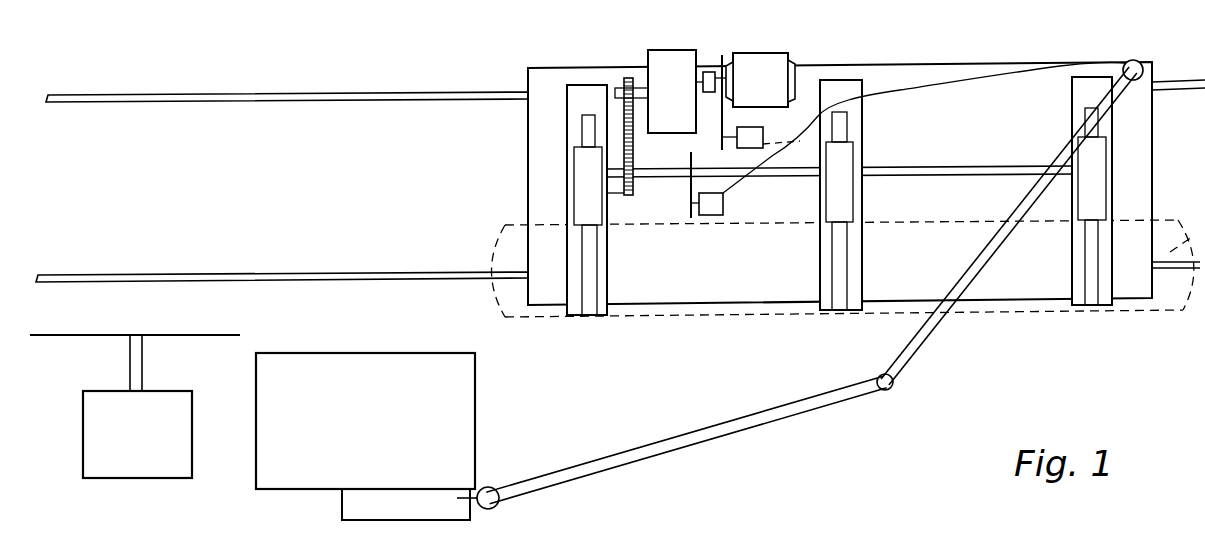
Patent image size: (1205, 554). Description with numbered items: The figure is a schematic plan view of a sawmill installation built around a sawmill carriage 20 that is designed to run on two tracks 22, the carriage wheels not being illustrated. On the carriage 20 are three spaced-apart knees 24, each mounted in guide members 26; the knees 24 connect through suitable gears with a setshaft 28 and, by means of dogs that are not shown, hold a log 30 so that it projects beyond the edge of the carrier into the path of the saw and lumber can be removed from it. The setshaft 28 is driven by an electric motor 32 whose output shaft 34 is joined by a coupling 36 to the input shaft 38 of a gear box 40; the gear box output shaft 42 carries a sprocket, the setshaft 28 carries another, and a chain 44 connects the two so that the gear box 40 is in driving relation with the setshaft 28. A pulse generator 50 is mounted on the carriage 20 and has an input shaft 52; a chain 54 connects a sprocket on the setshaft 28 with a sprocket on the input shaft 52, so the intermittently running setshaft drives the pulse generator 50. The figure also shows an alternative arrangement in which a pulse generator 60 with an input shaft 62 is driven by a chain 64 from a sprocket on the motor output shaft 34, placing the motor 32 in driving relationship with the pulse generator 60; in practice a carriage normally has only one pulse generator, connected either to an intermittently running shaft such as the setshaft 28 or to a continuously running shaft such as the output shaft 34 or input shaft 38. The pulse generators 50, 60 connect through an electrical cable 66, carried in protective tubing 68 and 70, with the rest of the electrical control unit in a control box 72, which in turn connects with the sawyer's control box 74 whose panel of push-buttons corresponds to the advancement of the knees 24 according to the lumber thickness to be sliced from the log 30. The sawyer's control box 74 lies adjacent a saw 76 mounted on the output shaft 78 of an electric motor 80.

The sawmill carriage 20 is at (1185, 168).
The tracks 22 is at (283, 99).
The knees 24 is at (586, 162).
The guide members 26 is at (607, 286).
The setshaft 28 is at (921, 171).
The log 30 is at (1196, 213).
The electric motor 32 is at (760, 80).
The output shaft 34 is at (721, 73).
The coupling 36 is at (712, 72).
The input shaft 38 is at (702, 82).
The gear box 40 is at (672, 91).
The output shaft 42 is at (638, 88).
The chain 44 is at (633, 145).
The pulse generator 50 is at (723, 205).
The input shaft 52 is at (691, 203).
The chain 54 is at (690, 184).
The pulse generator 60 is at (752, 138).
The input shaft 62 is at (722, 137).
The chain 64 is at (722, 122).
The electrical cable 66 is at (980, 73).
The protective tubing 68 is at (935, 327).
The protective tubing 70 is at (746, 425).
The control box 72 is at (386, 512).
The sawyer's control box 74 is at (483, 389).
The saw 76 is at (196, 336).
The output shaft 78 is at (134, 363).
The electric motor 80 is at (137, 434).